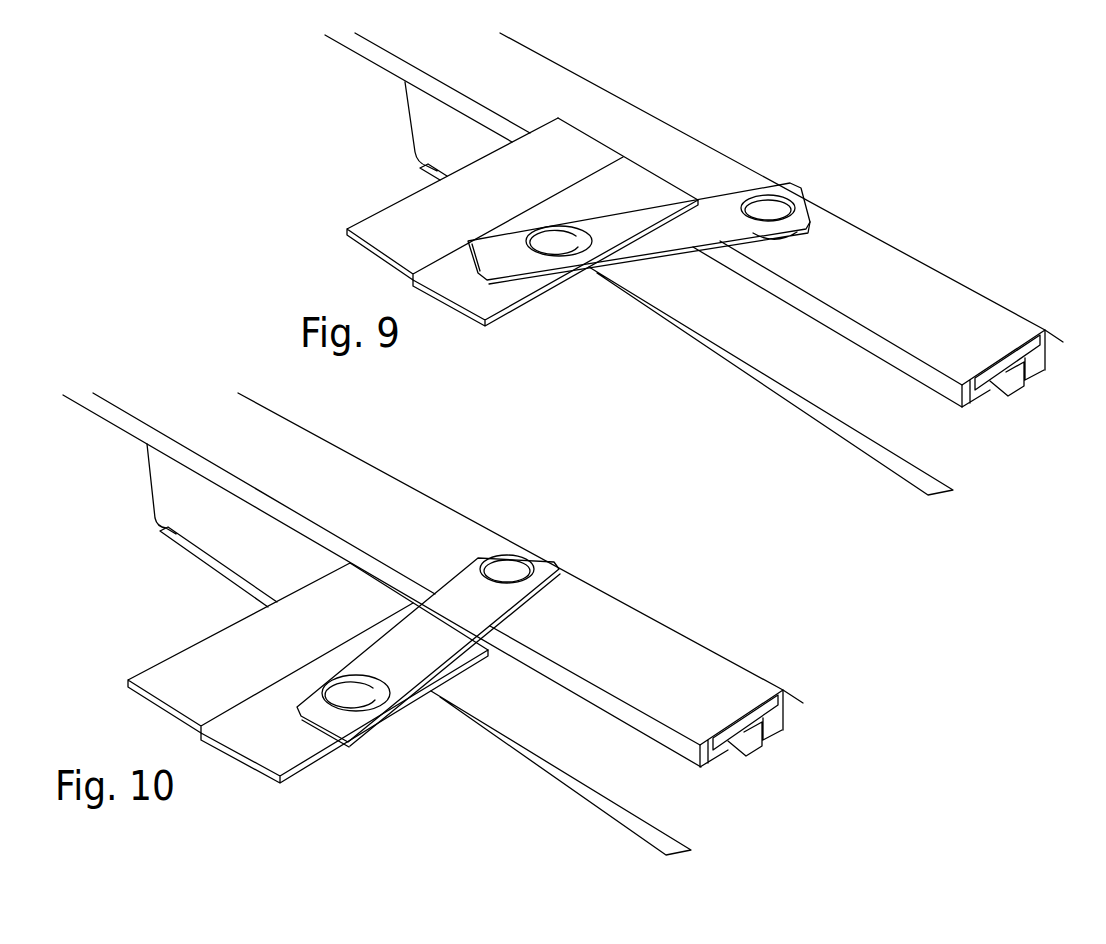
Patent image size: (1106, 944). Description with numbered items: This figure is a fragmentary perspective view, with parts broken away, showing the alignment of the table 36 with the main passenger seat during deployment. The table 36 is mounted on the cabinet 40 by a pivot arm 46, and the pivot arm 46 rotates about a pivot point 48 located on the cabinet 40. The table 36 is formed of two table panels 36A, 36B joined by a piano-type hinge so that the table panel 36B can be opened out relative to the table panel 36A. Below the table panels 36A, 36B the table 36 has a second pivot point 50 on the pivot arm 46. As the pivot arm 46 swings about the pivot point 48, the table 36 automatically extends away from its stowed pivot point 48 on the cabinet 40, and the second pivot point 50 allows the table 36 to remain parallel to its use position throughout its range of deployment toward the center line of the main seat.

In FIG. 9, the table 36 is at (511, 216).
In FIG. 10, the table 36 is at (292, 667).
In FIG. 9, the table panel 36A is at (493, 297).
In FIG. 10, the table panel 36A is at (297, 758).
In FIG. 9, the table panel 36B is at (379, 228).
In FIG. 10, the table panel 36B is at (168, 678).
In FIG. 9, the cabinet 40 is at (927, 292).
In FIG. 10, the cabinet 40 is at (698, 670).
In FIG. 9, the pivot arm 46 is at (648, 230).
In FIG. 10, the pivot arm 46 is at (440, 629).
In FIG. 9, the pivot point 48 is at (768, 205).
In FIG. 10, the pivot point 48 is at (507, 568).
In FIG. 9, the second pivot point 50 is at (562, 240).
In FIG. 10, the second pivot point 50 is at (358, 692).